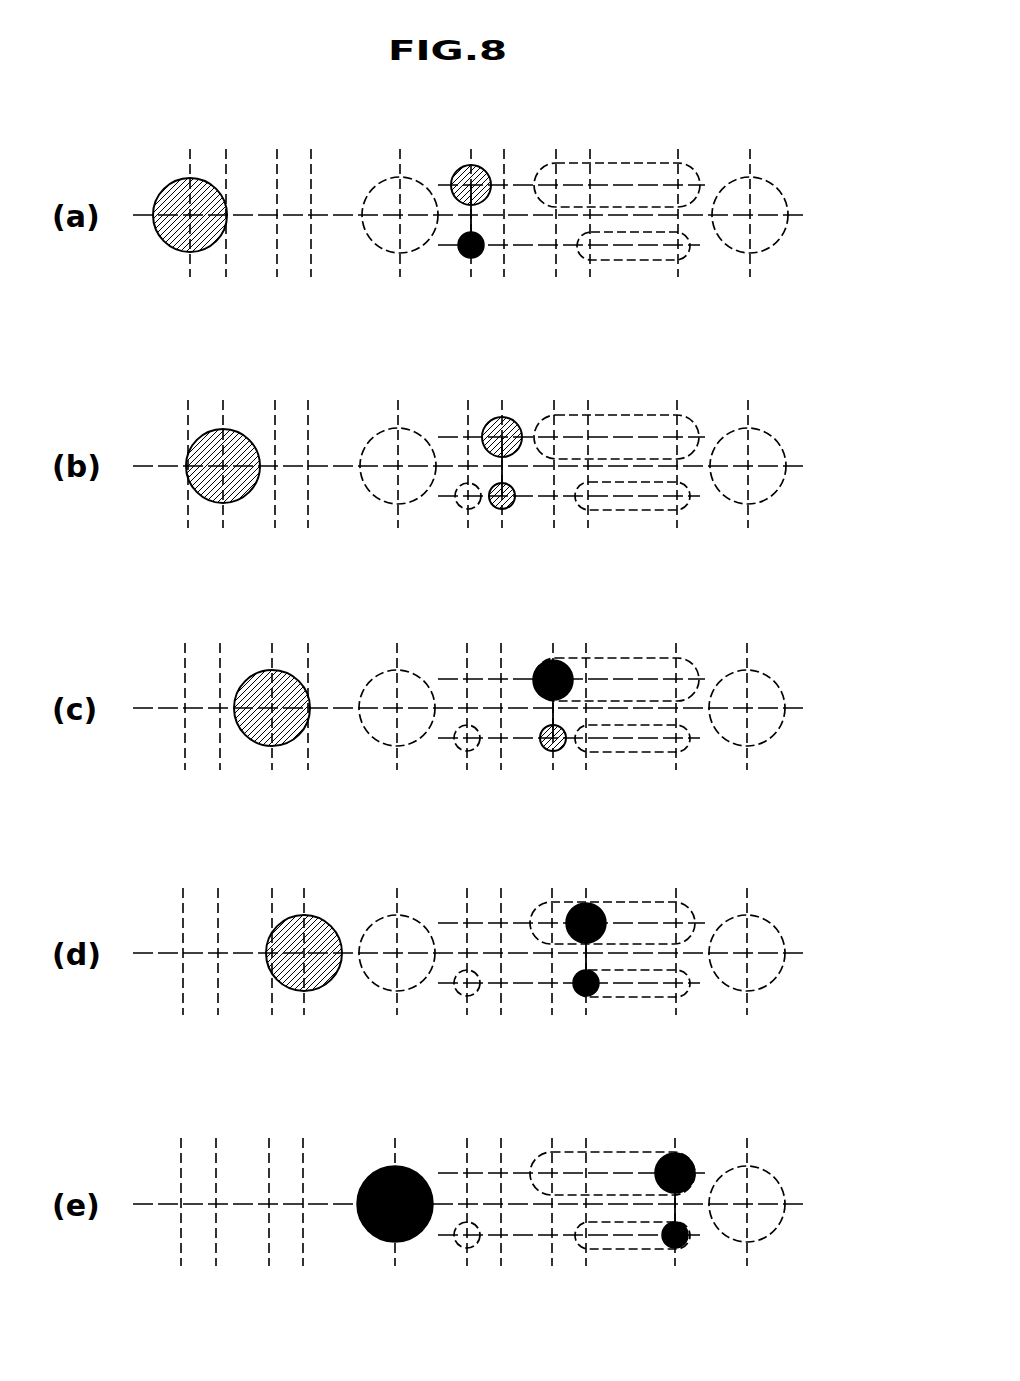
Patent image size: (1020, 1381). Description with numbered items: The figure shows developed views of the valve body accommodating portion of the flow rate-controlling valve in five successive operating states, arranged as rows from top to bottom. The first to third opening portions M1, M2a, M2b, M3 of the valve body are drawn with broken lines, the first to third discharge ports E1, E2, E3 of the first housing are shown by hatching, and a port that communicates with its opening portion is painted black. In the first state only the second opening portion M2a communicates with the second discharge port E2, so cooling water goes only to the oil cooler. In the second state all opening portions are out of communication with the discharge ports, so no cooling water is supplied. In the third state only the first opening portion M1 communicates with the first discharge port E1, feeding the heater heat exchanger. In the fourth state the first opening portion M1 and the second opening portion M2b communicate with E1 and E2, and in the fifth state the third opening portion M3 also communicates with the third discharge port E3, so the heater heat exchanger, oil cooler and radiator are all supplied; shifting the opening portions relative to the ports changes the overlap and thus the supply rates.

The first discharge port E1 is at (456, 176).
The second discharge port E2 is at (462, 252).
The third discharge port E3 is at (167, 182).
The first opening portion M1 is at (628, 162).
The second opening portion M2a is at (422, 1285).
The second opening portion M2b is at (637, 262).
The third opening portion M3 is at (377, 183).